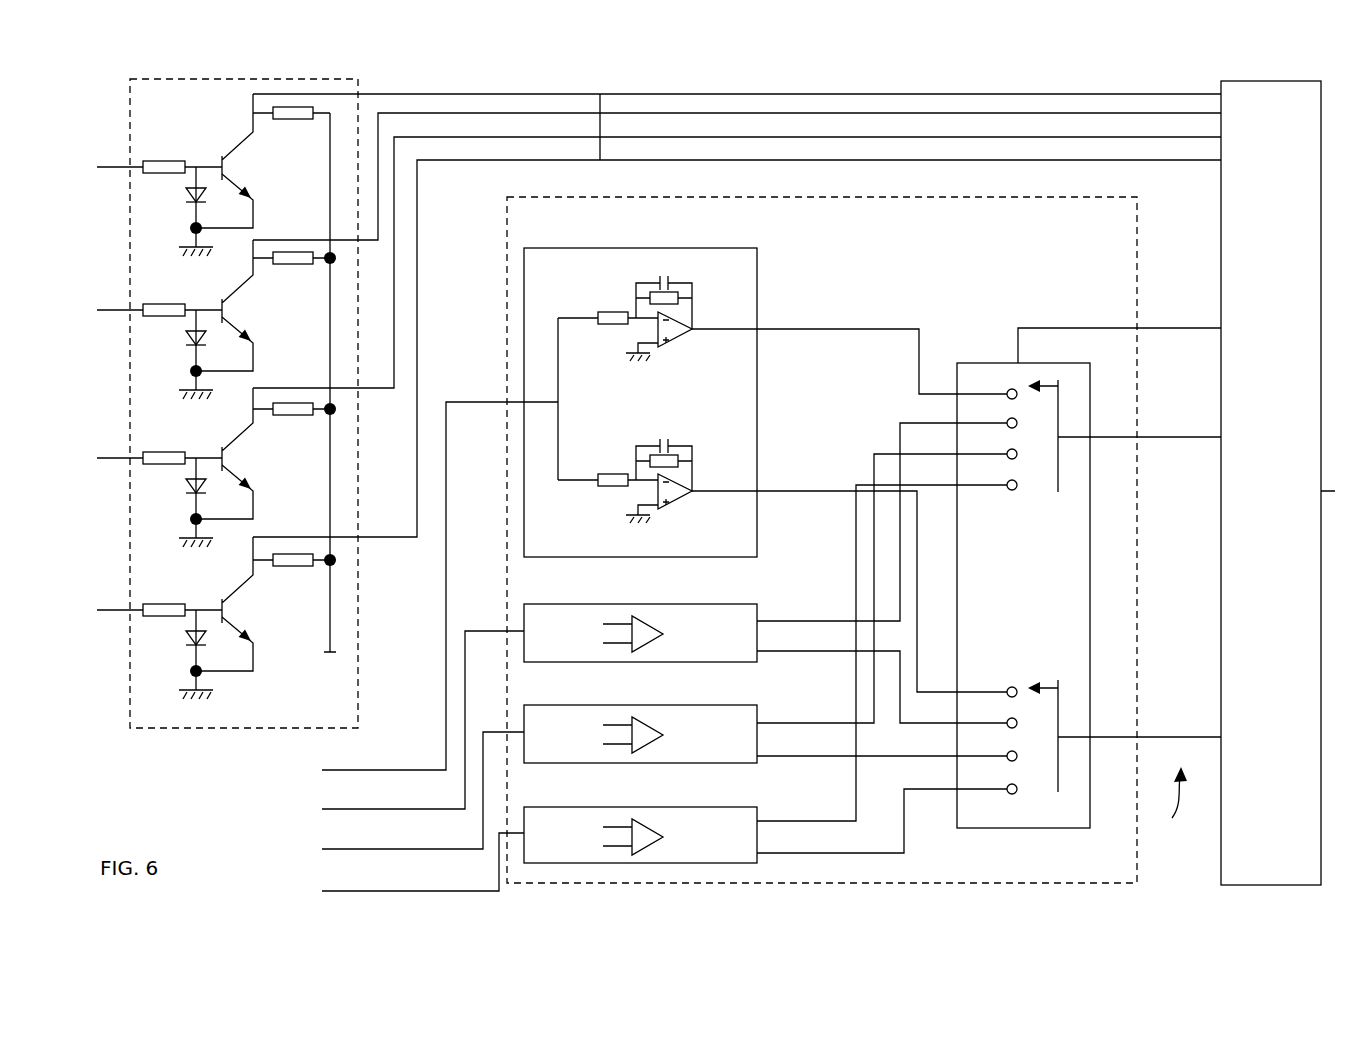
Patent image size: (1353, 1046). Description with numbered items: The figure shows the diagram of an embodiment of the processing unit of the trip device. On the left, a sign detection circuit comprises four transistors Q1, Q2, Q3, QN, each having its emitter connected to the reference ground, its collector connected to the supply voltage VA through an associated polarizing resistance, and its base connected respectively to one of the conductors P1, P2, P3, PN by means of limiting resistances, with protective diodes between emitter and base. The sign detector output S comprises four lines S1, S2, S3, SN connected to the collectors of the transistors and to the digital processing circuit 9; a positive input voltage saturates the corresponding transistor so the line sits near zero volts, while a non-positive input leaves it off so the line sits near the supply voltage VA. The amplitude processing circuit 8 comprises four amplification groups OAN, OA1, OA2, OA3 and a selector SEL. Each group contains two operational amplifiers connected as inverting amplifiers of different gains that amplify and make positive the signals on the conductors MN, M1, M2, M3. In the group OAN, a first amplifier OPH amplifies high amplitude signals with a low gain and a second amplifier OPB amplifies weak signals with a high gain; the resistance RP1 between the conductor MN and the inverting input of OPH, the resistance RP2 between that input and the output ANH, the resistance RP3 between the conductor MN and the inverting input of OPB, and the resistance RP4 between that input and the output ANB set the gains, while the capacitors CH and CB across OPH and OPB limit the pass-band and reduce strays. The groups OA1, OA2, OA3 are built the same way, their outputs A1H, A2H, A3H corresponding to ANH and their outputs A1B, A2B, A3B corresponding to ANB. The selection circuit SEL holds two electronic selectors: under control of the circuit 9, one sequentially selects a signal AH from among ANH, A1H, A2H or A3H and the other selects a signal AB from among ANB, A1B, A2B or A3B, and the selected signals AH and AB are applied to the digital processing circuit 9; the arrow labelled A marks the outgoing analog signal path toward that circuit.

The conductor P3 is at (110, 167).
The conductor P2 is at (110, 310).
The conductor P1 is at (110, 458).
The conductor PN is at (110, 610).
The transistor Q3 is at (260, 180).
The transistor Q2 is at (260, 323).
The transistor Q1 is at (260, 475).
The transistor QN is at (258, 628).
The supply voltage VA is at (330, 654).
The sign detector output S is at (552, 172).
The line SN is at (630, 160).
The line S1 is at (703, 137).
The line S2 is at (788, 113).
The line S3 is at (867, 94).
The amplitude processing circuit 8 is at (853, 197).
The amplification group OAN is at (640, 385).
The polarizing resistance RP1 is at (615, 313).
The feedback resistance RP2 is at (690, 310).
The capacitor CH is at (666, 282).
The first amplifier OPH is at (676, 337).
The polarizing resistance RP3 is at (615, 477).
The feedback resistance RP4 is at (690, 472).
The capacitor CB is at (666, 445).
The second amplifier OPB is at (676, 500).
The output ANH is at (845, 329).
The output ANB is at (830, 491).
The amplification group OA1 is at (616, 604).
The amplification group OA2 is at (616, 705).
The amplification group OA3 is at (622, 807).
The output A1H is at (828, 621).
The output A1B is at (828, 651).
The output A2H is at (833, 723).
The output A2B is at (838, 756).
The output A3H is at (835, 821).
The output A3B is at (838, 853).
The conductor MN is at (375, 770).
The conductor M1 is at (380, 809).
The conductor M2 is at (380, 849).
The conductor M3 is at (380, 891).
The selection circuit SEL is at (1047, 828).
The selected signal AH is at (1195, 437).
The selected signal AB is at (1200, 737).
The analog output A is at (1173, 801).
The digital processing circuit 9 is at (1221, 297).